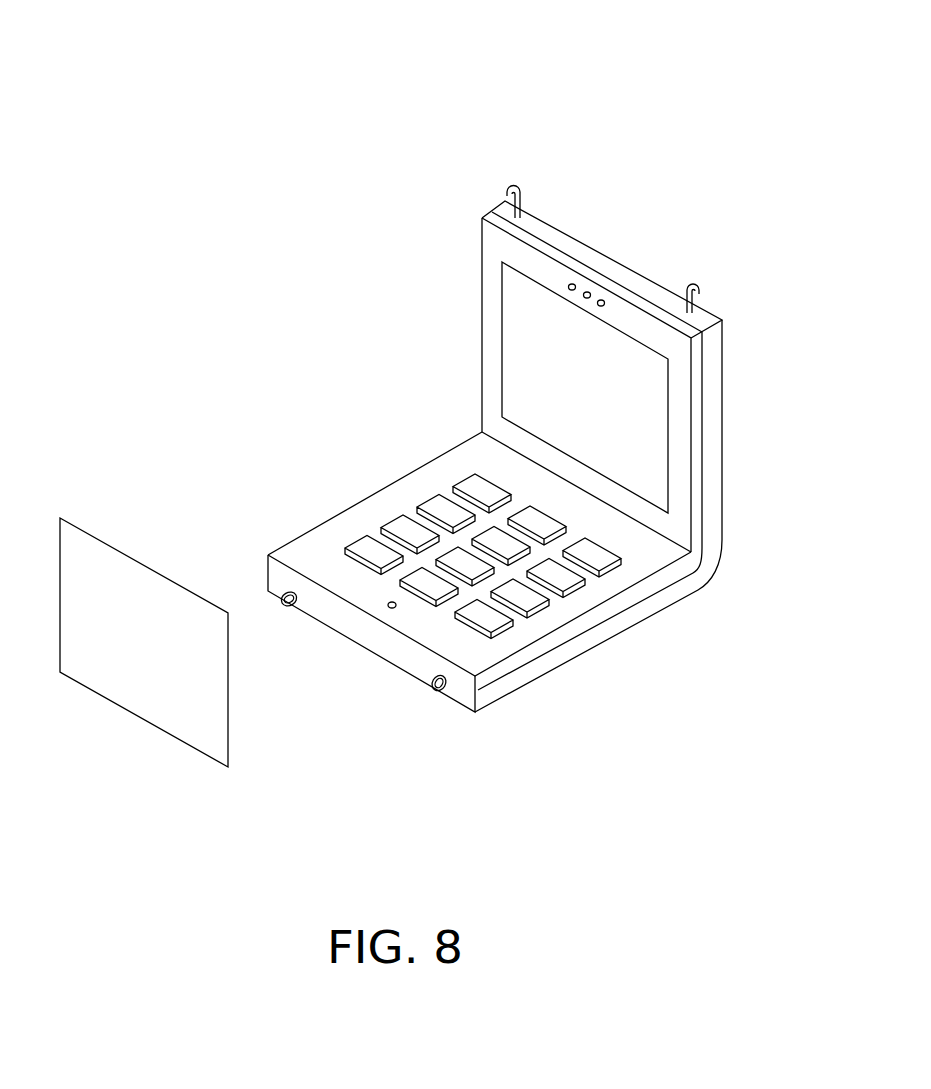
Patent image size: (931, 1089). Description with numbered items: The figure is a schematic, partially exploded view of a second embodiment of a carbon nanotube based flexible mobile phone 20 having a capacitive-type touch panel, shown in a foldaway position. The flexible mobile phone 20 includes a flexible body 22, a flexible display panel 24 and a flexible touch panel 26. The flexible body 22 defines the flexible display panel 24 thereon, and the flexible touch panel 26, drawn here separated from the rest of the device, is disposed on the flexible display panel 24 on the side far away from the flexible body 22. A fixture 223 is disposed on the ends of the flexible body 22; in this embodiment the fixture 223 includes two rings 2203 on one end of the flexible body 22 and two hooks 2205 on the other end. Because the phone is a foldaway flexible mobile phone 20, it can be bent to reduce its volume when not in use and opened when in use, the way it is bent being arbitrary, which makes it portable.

The flexible mobile phone 20 is at (392, 112).
The flexible body 22 is at (422, 458).
The flexible display panel 24 is at (537, 353).
The flexible touch panel 26 is at (132, 593).
The fixture 223 is at (818, 497).
The rings 2203 is at (441, 694).
The hooks 2205 is at (722, 320).